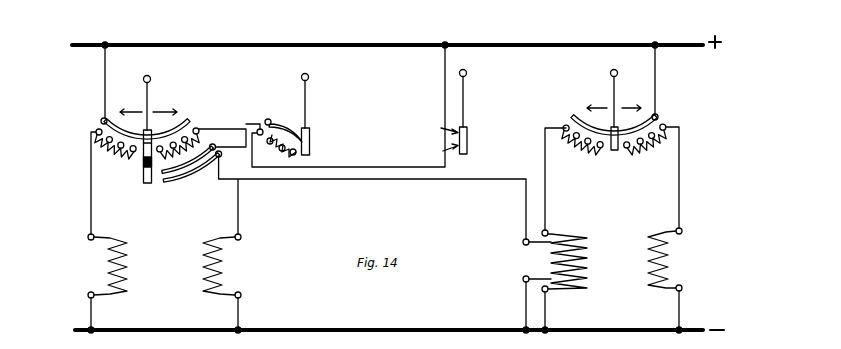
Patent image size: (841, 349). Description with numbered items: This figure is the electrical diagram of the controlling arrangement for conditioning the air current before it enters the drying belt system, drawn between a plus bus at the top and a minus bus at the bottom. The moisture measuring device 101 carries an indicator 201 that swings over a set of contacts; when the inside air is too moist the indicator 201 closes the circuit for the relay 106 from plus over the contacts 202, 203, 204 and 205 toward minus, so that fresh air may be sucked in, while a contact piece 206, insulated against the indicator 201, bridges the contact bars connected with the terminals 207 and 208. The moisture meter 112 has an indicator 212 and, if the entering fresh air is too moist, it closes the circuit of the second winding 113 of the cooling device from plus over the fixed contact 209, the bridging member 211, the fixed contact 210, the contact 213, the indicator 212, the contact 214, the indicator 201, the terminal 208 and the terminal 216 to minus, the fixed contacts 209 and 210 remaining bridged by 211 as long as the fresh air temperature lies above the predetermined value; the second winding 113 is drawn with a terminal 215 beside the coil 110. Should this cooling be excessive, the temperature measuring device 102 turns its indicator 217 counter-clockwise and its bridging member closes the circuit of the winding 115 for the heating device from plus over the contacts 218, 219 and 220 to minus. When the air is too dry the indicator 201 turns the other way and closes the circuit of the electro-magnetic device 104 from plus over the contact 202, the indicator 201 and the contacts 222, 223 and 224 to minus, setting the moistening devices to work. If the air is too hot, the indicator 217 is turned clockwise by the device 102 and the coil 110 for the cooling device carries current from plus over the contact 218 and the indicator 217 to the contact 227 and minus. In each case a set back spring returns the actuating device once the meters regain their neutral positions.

The measuring device 101 is at (159, 101).
The measuring device 102 is at (628, 99).
The electro-magnetic device 104 is at (104, 266).
The electromagnetic regulator 106 is at (227, 266).
The coil 110 is at (560, 180).
The moisture meter 112 is at (319, 101).
The second winding 113 is at (596, 259).
The winding 115 is at (674, 259).
The indicator 201 is at (146, 156).
The contact 202 is at (92, 84).
The contact 203 is at (226, 130).
The contact 204 is at (251, 242).
The contact 205 is at (251, 311).
The contact piece 206 is at (150, 184).
The terminal 207 is at (204, 152).
The terminal 208 is at (344, 195).
The fixed contact 209 is at (438, 128).
The fixed contact 210 is at (439, 151).
The bridging member 211 is at (467, 143).
The indicator 212 is at (310, 143).
The contact 213 is at (346, 106).
The contact 214 is at (271, 121).
The terminal 215 is at (516, 249).
The terminal 216 is at (515, 300).
The indicator 217 is at (615, 152).
The contact 218 is at (669, 82).
The contact 219 is at (666, 126).
The contact 220 is at (692, 236).
The contact 222 is at (86, 179).
The contact 223 is at (79, 242).
The contact 224 is at (79, 311).
The contact 227 is at (692, 307).